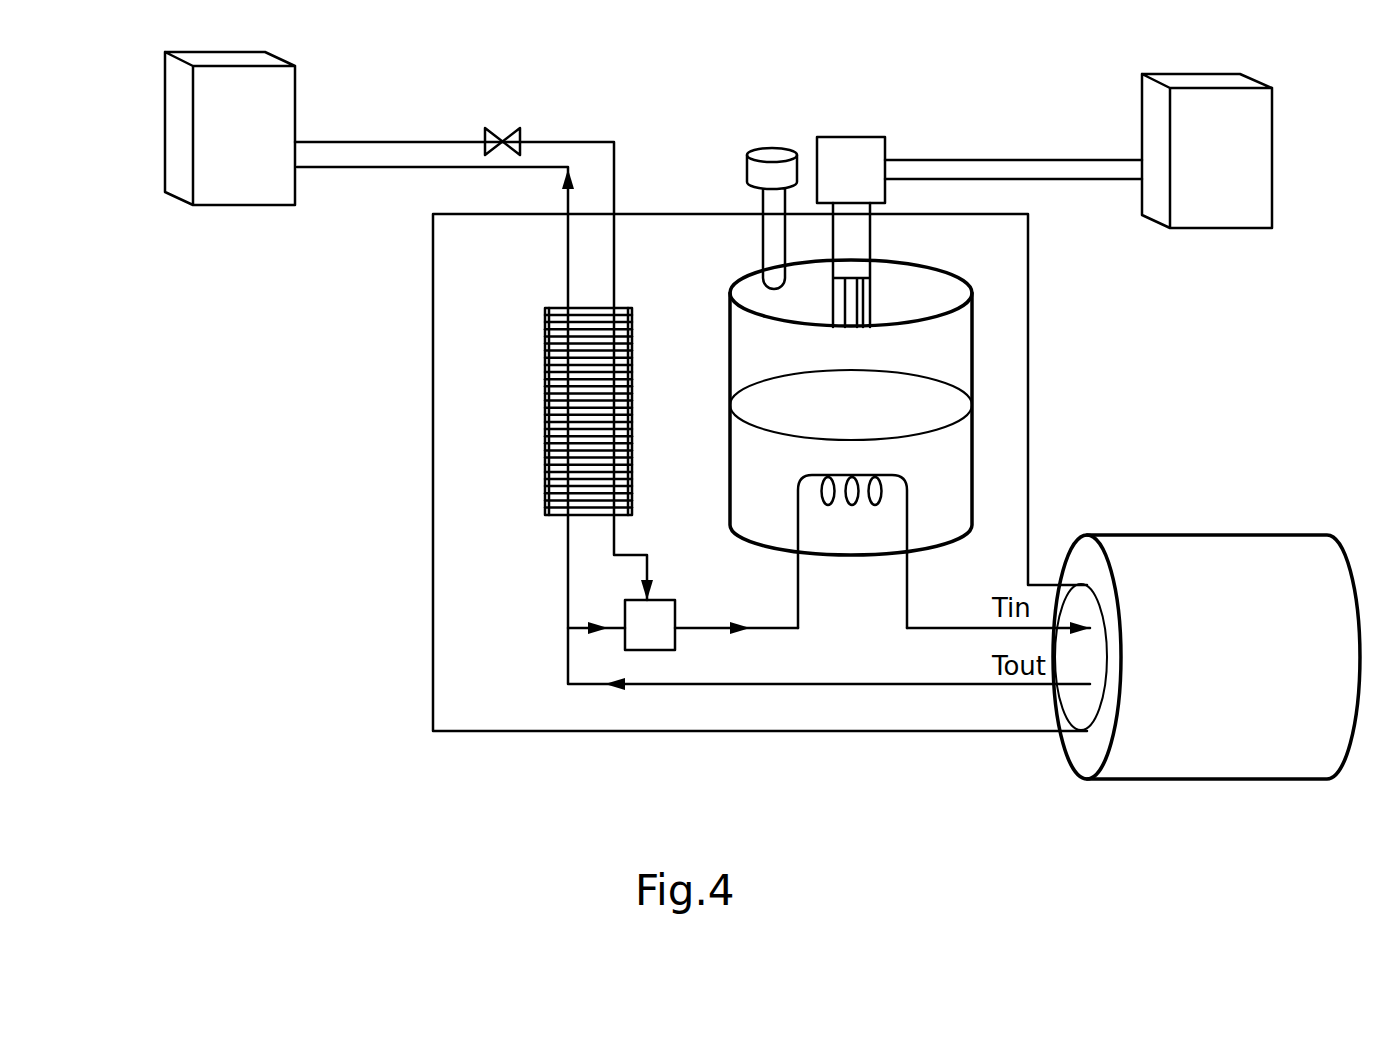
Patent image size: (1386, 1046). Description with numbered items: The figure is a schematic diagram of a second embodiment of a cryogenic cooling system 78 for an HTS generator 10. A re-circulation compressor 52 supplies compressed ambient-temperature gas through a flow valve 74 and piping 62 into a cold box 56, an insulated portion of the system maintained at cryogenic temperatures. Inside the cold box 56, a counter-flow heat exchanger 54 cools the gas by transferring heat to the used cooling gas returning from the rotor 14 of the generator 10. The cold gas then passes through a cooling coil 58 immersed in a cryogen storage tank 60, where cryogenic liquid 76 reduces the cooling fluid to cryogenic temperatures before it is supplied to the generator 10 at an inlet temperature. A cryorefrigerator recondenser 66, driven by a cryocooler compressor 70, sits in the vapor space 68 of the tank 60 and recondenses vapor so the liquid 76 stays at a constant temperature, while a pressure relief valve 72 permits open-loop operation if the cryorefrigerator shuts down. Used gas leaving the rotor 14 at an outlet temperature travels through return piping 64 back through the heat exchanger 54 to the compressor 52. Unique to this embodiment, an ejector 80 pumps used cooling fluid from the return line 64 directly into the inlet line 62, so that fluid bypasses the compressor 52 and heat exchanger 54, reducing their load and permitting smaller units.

The HTS generator 10 is at (1255, 780).
The rotor 14 is at (1087, 610).
The re-circulation compressor 52 is at (290, 93).
The counter-flow heat exchanger 54 is at (545, 418).
The cold box 56 is at (708, 733).
The cooling coil 58 is at (907, 490).
The cryogen storage tank 60 is at (730, 446).
The piping 62 is at (392, 141).
The return piping 64 is at (347, 168).
The cryorefrigerator recondenser 66 is at (847, 150).
The vapor space 68 is at (950, 344).
The cryocooler compressor 70 is at (1252, 150).
The pressure relief valve 72 is at (772, 152).
The flow valve 74 is at (508, 128).
The cryogenic liquid 76 is at (952, 460).
The cryogenic cooling system 78 is at (642, 57).
The ejector 80 is at (660, 596).